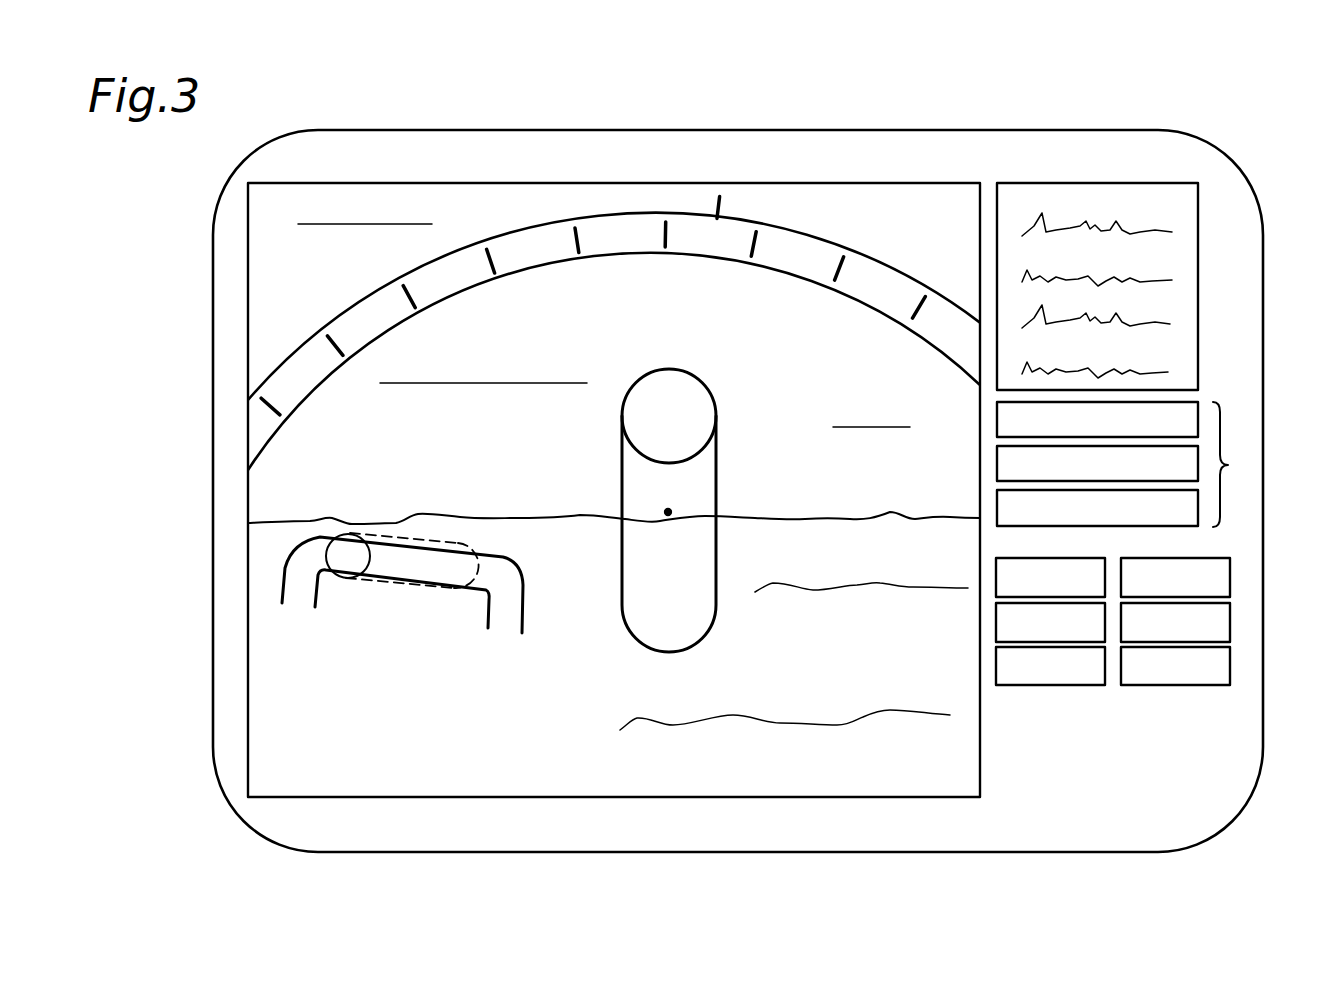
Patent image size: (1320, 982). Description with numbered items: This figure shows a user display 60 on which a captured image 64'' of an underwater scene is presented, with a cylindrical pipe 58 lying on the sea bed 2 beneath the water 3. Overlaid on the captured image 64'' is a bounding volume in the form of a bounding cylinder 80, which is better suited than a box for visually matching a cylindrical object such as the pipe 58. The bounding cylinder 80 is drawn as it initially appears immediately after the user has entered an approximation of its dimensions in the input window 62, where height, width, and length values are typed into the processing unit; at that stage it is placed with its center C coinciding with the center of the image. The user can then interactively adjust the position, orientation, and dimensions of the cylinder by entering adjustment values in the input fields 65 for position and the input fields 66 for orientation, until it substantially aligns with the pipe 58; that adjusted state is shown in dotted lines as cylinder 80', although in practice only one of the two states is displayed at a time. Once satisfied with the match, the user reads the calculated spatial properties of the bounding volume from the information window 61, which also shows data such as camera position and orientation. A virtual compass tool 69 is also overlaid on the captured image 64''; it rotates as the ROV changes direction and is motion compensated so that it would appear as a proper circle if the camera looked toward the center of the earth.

The user display 60 is at (900, 132).
The information window 61 is at (1199, 295).
The input window 62 is at (1228, 465).
The captured image 64'' is at (614, 437).
The input fields 65 is at (1053, 580).
The input fields 66 is at (1177, 580).
The virtual compass tool 69 is at (903, 278).
The bounding cylinder 80 is at (702, 510).
The cylinder in aligned position 80' is at (402, 524).
The pipe 58 is at (477, 590).
The center C is at (668, 512).
The water 3 is at (805, 393).
The sea bed 2 is at (800, 645).